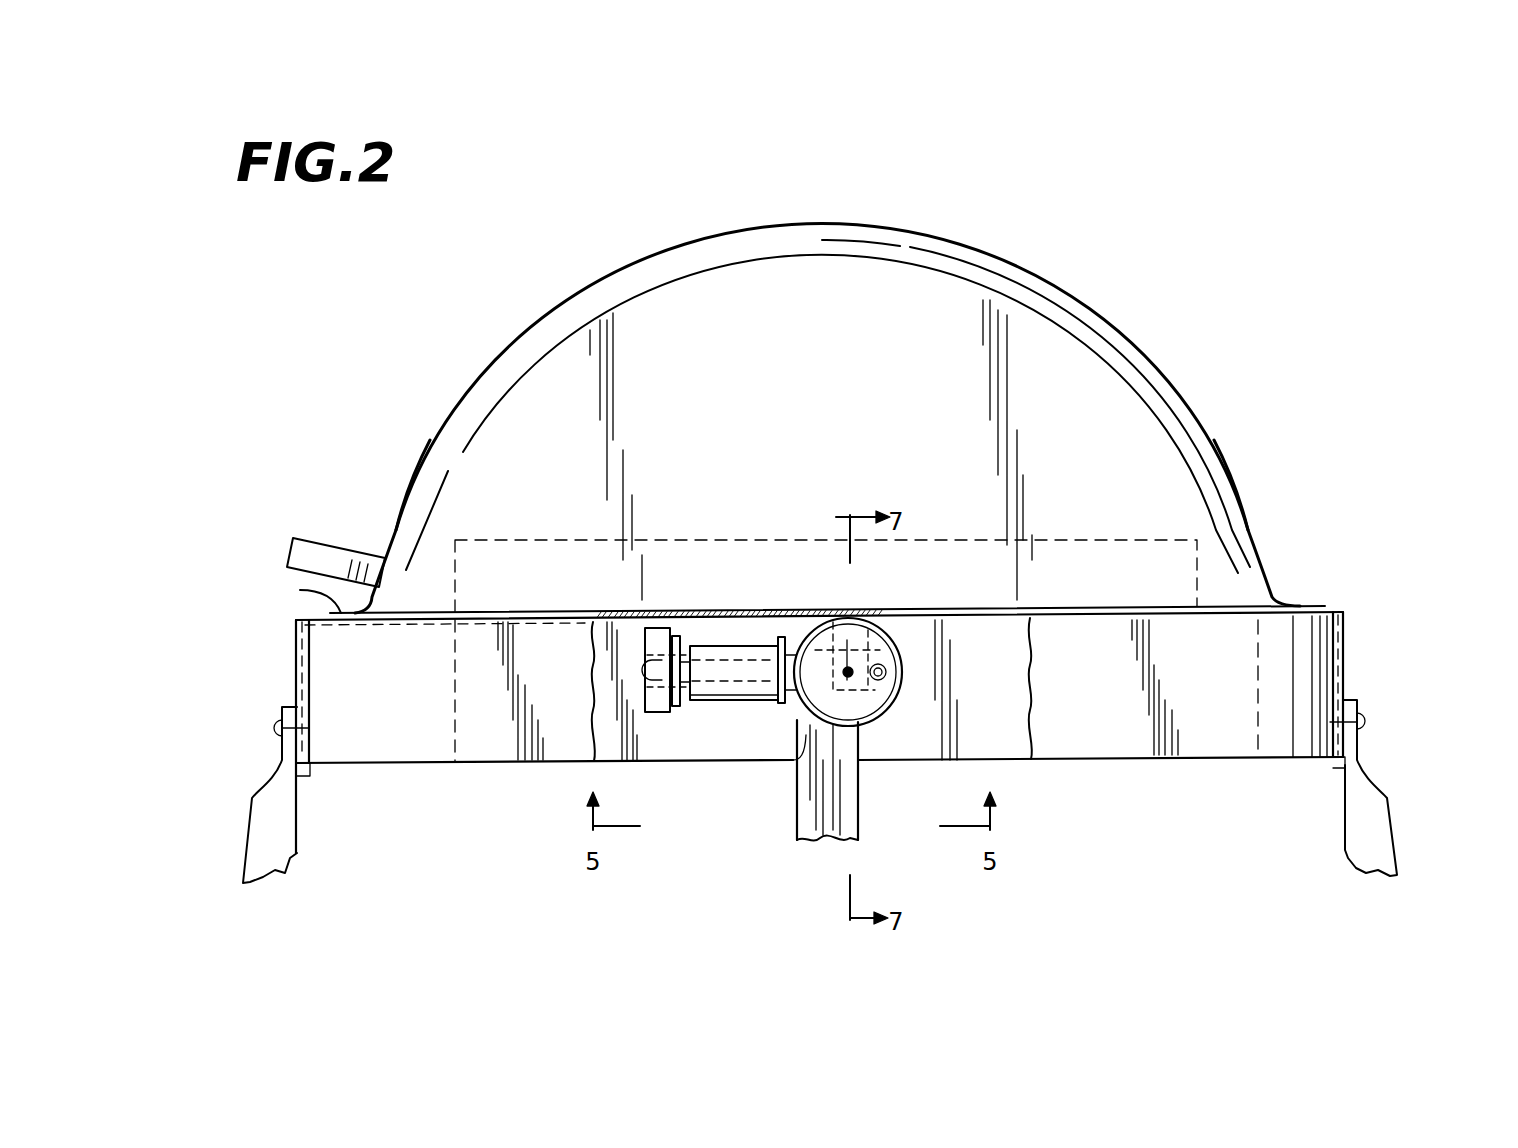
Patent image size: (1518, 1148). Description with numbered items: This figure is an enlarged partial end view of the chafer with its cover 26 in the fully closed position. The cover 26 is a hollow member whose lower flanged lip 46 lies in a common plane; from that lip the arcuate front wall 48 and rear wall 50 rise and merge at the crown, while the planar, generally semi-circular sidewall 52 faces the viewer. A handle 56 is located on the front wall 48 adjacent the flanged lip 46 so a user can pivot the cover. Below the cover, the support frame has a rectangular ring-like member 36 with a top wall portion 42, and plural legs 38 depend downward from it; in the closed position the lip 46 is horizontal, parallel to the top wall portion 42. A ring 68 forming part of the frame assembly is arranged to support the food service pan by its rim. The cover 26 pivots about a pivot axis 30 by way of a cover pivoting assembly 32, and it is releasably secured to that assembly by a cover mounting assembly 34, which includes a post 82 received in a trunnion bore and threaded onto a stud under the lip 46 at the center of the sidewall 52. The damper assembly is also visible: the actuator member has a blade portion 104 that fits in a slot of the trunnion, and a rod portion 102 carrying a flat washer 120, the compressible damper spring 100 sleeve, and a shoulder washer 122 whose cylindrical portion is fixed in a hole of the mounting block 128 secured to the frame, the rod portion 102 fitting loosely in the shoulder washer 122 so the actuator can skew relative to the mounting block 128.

The cover 26 is at (566, 385).
The front wall 48 is at (451, 415).
The rear wall 50 is at (1222, 452).
The sidewall 52 is at (848, 385).
The handle 56 is at (292, 552).
The flanged lip 46 is at (300, 590).
The top wall portion 42 is at (788, 611).
The ring-like member 36 is at (322, 661).
The ring 68 is at (1165, 537).
The legs 38 is at (263, 823).
The mounting block 128 is at (660, 713).
The shoulder washer 122 is at (681, 706).
The rod portion 102 is at (683, 645).
The damper spring 100 is at (737, 646).
The flat washer 120 is at (793, 703).
The pivot axis 30 is at (850, 668).
The post 82 is at (858, 632).
The cover mounting assembly 34 is at (848, 634).
The cover pivoting assembly 32 is at (869, 718).
The blade portion 104 is at (800, 738).